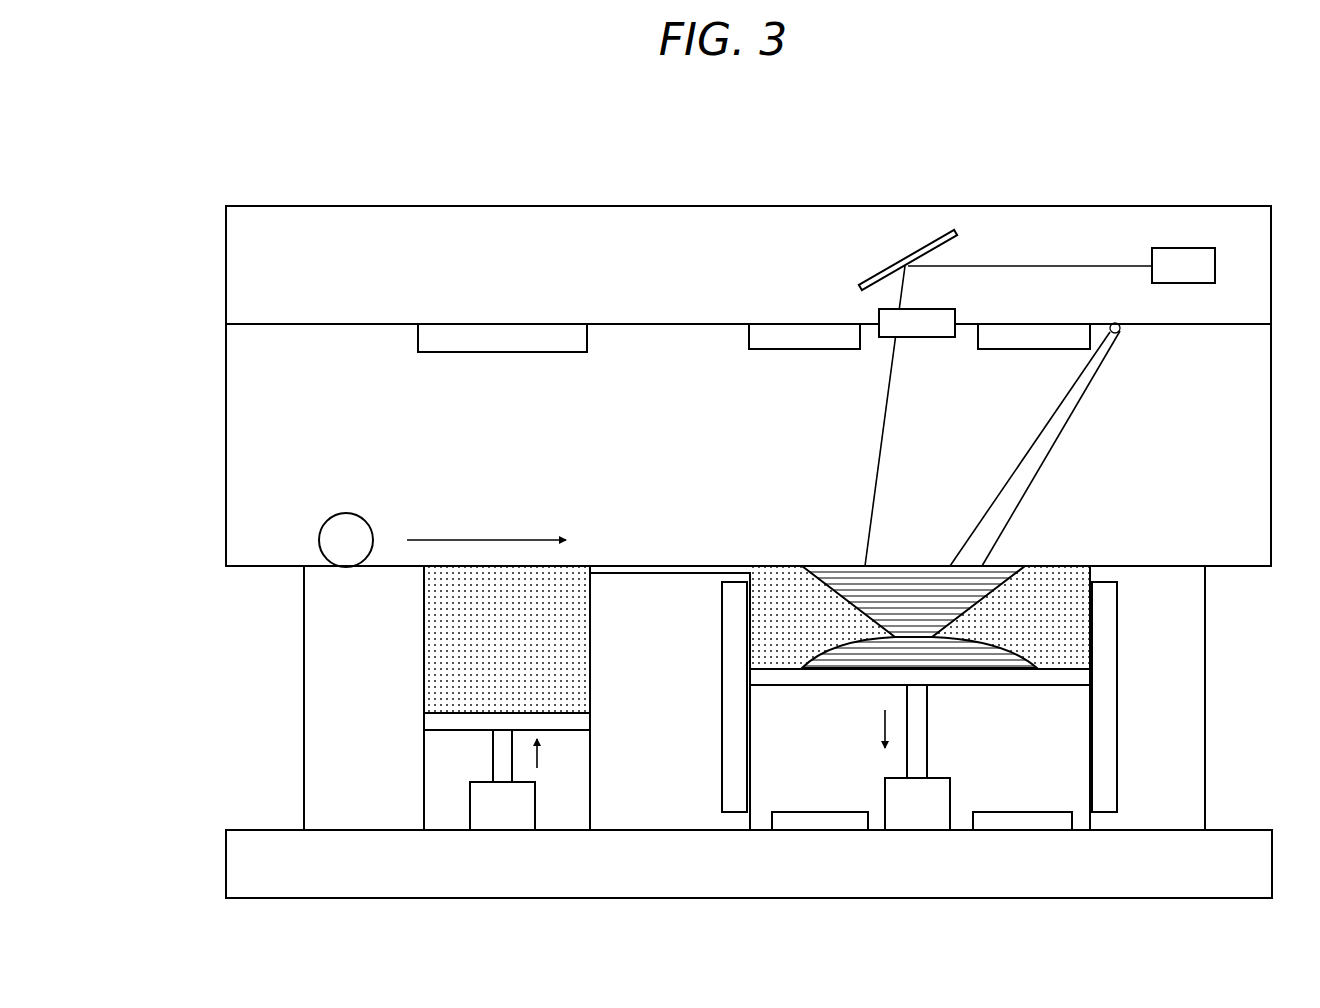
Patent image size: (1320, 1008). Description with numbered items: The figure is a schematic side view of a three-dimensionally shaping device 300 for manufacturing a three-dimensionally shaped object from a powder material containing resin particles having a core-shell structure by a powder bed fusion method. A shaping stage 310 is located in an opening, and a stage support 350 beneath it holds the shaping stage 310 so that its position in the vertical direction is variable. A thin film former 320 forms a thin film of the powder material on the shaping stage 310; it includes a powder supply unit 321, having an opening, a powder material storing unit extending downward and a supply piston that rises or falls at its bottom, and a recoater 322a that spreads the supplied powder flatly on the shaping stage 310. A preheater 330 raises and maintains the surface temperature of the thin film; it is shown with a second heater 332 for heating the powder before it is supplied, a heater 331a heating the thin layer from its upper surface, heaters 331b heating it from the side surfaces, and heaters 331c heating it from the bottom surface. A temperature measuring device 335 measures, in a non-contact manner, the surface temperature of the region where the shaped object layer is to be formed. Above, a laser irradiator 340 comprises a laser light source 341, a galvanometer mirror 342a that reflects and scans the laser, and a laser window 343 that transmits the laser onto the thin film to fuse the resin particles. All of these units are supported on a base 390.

The three-dimensionally shaping device 300 is at (572, 110).
The shaping stage 310 is at (994, 694).
The thin film former 320 is at (219, 605).
The powder supply unit 321 is at (448, 764).
The recoater 322a is at (318, 552).
The preheater 330 is at (543, 421).
The heater for heating the thin layer from an upper surface 331a is at (973, 342).
The heater for heating the thin layer from a side surface 331b is at (711, 678).
The heater for heating the thin layer from a bottom surface 331c is at (831, 834).
The second heater 332 is at (509, 364).
The temperature measuring device 335 is at (1122, 338).
The laser irradiator 340 is at (1167, 152).
The laser light source 341 is at (1179, 234).
The galvanometer mirror 342a is at (928, 230).
The laser window 343 is at (955, 301).
The stage support 350 is at (874, 783).
The base 390 is at (220, 820).